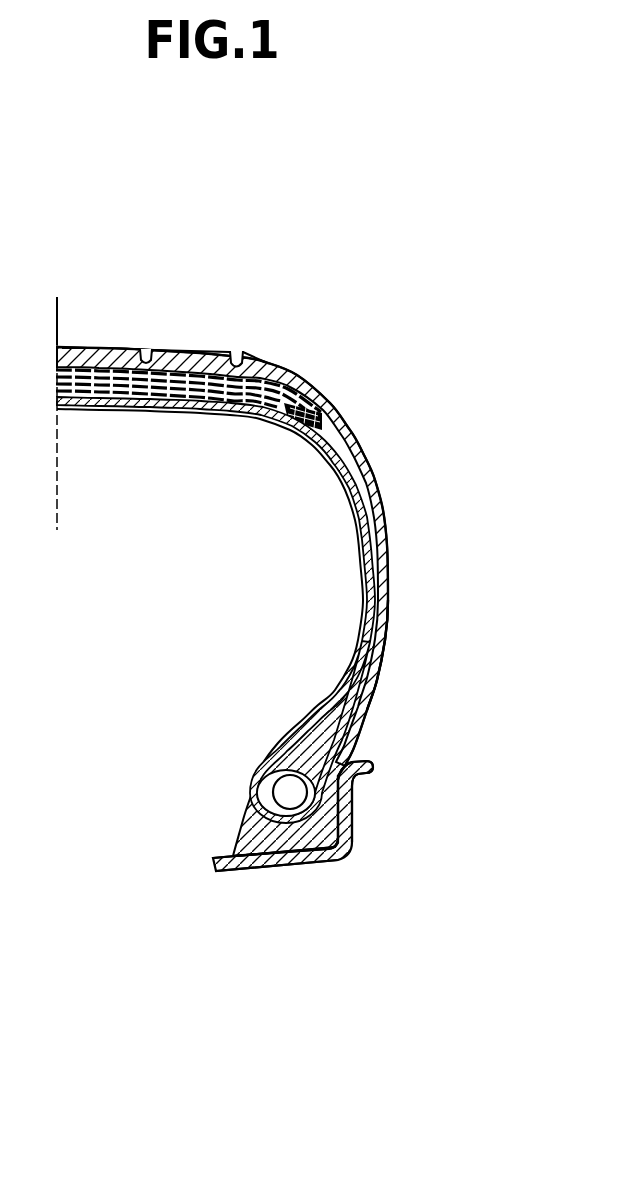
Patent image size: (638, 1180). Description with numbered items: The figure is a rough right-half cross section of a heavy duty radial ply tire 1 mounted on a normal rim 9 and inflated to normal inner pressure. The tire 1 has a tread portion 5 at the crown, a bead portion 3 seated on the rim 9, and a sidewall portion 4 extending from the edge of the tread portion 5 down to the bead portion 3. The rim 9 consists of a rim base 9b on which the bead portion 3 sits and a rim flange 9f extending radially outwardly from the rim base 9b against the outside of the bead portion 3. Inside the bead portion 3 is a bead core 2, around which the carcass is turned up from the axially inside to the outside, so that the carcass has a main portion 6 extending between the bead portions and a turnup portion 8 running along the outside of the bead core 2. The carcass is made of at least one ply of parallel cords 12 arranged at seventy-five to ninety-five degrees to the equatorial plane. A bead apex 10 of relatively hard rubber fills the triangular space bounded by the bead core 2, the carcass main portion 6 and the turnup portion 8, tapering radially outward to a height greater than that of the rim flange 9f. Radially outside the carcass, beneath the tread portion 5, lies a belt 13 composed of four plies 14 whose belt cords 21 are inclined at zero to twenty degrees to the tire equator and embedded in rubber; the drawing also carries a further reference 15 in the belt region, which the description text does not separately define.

The heavy duty radial ply tire 1 is at (430, 425).
The bead core 2 is at (284, 798).
The bead portion 3 is at (216, 833).
The sidewall portion 4 is at (404, 604).
The tread portion 5 is at (251, 333).
The carcass main portion 6 is at (360, 527).
The carcass turnup portion 8 is at (300, 740).
The rim 9 is at (305, 858).
The rim base 9b is at (252, 870).
The rim flange 9f is at (352, 814).
The bead apex 10 is at (278, 744).
The carcass cords 12 is at (162, 565).
The belt 13 is at (74, 212).
The belt ply 14 is at (67, 340).
The belt layer 15 is at (285, 372).
The belt cords 21 is at (326, 392).